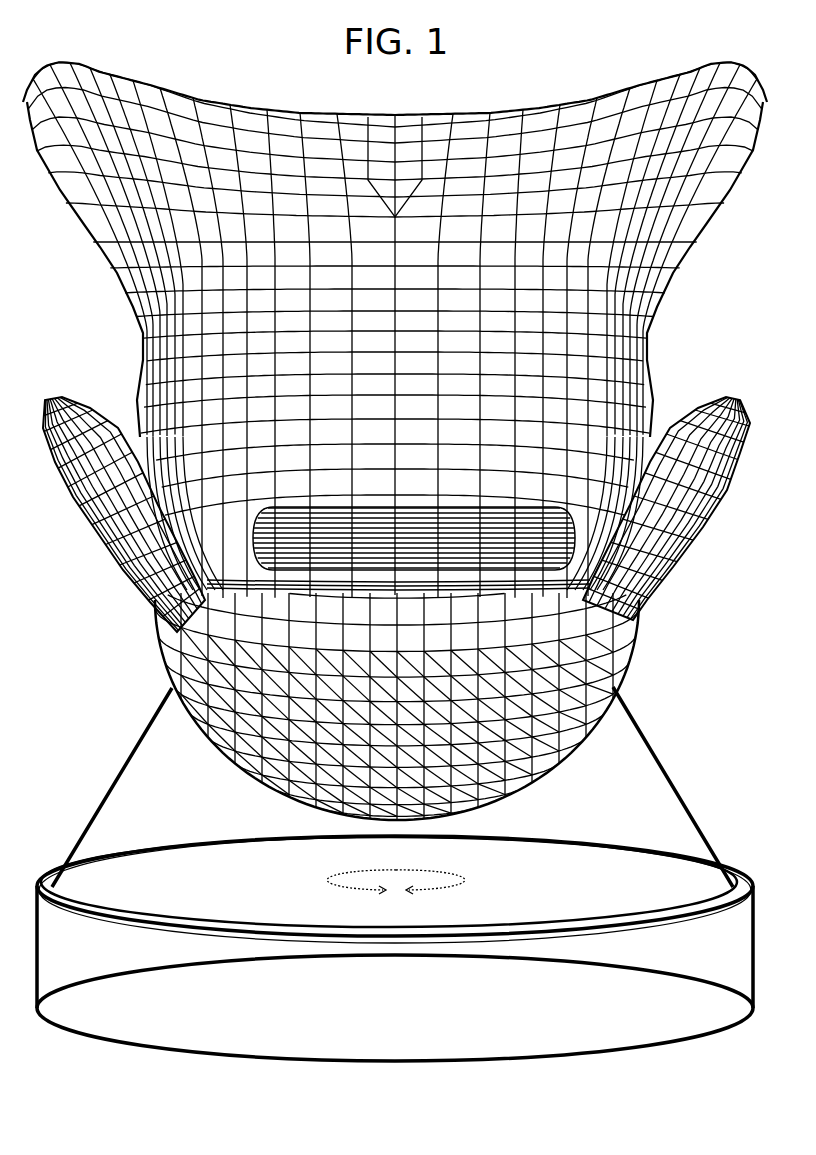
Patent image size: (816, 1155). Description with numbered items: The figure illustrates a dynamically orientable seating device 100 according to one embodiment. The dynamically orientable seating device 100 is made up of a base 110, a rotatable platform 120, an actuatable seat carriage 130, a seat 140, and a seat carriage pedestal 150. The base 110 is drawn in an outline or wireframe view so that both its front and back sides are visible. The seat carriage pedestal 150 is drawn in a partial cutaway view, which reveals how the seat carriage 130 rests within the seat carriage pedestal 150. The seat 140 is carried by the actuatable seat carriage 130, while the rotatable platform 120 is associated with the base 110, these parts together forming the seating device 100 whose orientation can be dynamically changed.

The dynamically orientable seating device 100 is at (96, 627).
The base 110 is at (160, 1054).
The rotatable platform 120 is at (137, 933).
The actuatable seat carriage 130 is at (643, 661).
The seat 140 is at (658, 308).
The seat carriage pedestal 150 is at (665, 752).